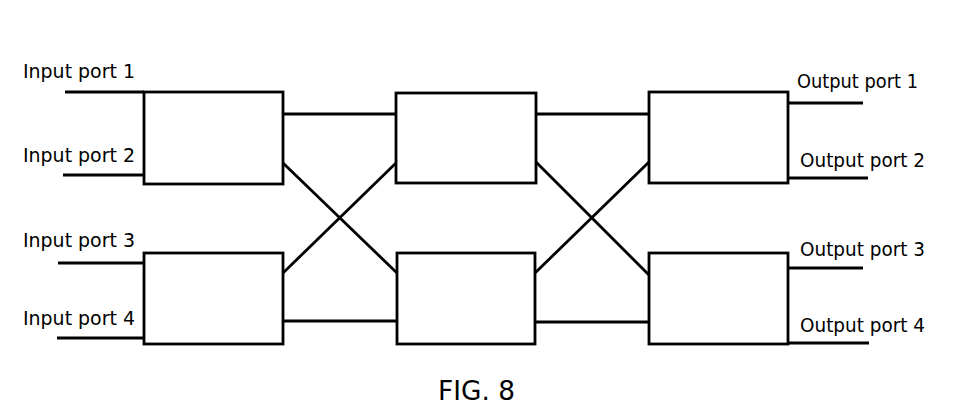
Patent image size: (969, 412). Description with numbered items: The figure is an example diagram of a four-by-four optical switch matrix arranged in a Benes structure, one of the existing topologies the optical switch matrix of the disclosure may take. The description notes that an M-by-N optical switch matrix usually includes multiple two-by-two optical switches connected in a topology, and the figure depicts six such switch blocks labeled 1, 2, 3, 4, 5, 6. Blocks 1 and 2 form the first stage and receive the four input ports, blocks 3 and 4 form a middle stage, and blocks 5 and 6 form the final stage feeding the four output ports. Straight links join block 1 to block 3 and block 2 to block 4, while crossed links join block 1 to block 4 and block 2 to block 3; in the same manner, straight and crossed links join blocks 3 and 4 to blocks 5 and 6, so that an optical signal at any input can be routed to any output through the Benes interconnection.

The first 2x2 optical switch unit 1 is at (213, 138).
The second 2x2 optical switch unit 2 is at (213, 298).
The third 2x2 optical switch unit 3 is at (466, 138).
The fourth 2x2 optical switch unit 4 is at (466, 298).
The fifth 2x2 optical switch unit 5 is at (718, 137).
The sixth 2x2 optical switch unit 6 is at (718, 298).